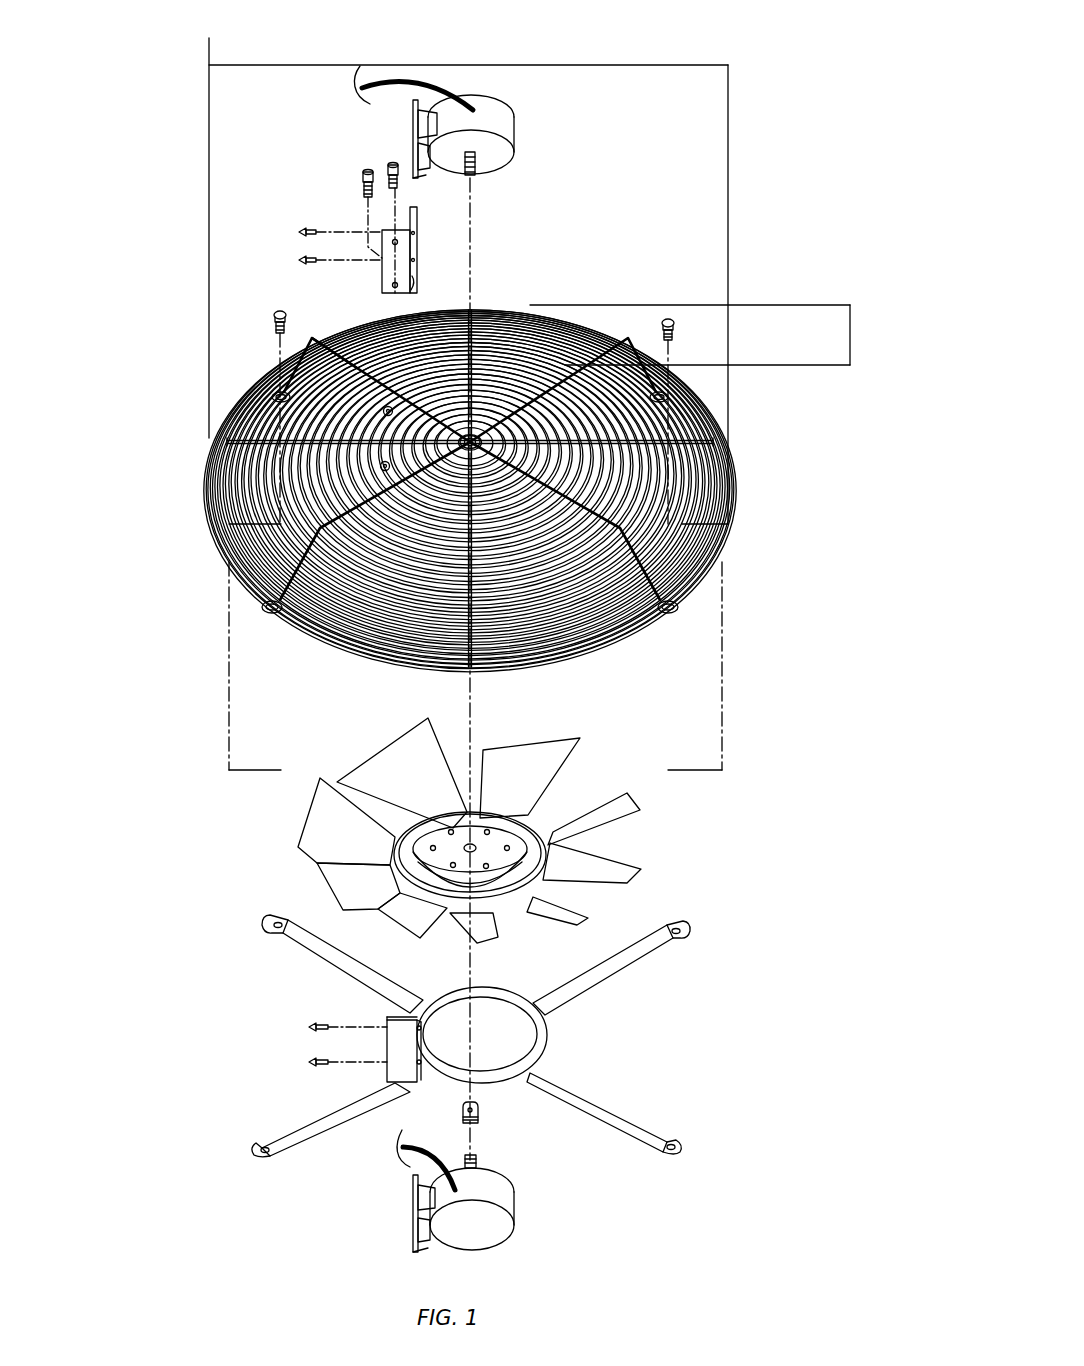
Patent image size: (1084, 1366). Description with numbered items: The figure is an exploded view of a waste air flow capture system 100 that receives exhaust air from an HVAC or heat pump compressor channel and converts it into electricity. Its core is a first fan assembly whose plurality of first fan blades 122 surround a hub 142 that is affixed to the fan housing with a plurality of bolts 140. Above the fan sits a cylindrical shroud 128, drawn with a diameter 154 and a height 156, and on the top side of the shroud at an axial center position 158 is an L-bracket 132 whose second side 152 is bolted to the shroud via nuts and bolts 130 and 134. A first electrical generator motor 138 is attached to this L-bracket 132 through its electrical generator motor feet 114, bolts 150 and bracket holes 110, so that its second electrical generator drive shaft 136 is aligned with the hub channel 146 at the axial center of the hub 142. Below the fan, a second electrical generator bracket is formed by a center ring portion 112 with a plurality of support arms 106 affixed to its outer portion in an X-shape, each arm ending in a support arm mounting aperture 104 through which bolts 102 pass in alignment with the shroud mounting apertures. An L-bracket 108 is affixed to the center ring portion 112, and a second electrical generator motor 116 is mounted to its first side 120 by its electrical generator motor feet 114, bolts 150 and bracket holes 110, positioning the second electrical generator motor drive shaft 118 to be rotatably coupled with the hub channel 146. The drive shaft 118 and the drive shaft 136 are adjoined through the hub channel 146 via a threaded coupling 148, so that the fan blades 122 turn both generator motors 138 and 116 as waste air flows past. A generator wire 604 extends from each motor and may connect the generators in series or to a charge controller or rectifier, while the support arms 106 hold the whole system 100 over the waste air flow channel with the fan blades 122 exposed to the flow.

The waste air flow capture system 100 is at (158, 268).
The bolts 102 is at (276, 312).
The support arm mounting aperture 104 is at (427, 1015).
The support arms 106 is at (344, 960).
The L-bracket 108 is at (382, 270).
The bracket holes 110 is at (393, 241).
The center ring portion 112 is at (545, 1044).
The electrical generator motor feet 114 is at (417, 153).
The second electrical generator motor 116 is at (515, 1215).
The second electrical generator motor drive shaft 118 is at (477, 1155).
The first side 120 is at (416, 245).
The first fan blades 122 is at (567, 750).
The cylindrical shroud 128 is at (545, 661).
The nuts and bolts 130 is at (383, 416).
The L-bracket 132 is at (417, 217).
The nuts and/or bolts 134 is at (390, 168).
The second electrical generator drive shaft 136 is at (477, 170).
The first electrical generator motor 138 is at (514, 112).
The bolts 140 is at (507, 848).
The hub 142 is at (497, 865).
The hub channel 146 is at (464, 846).
The threaded coupling 148 is at (479, 1110).
The bolts 150 is at (298, 232).
The second side 152 is at (413, 282).
The diameter 154 is at (612, 65).
The height 156 is at (850, 333).
The axial center position 158 is at (375, 378).
The generator wire 604 is at (383, 85).